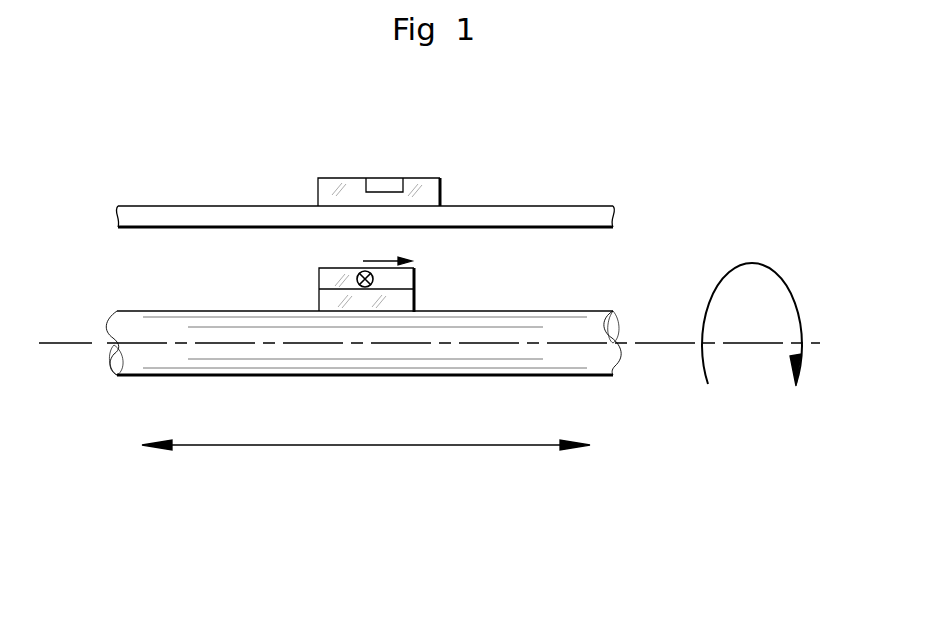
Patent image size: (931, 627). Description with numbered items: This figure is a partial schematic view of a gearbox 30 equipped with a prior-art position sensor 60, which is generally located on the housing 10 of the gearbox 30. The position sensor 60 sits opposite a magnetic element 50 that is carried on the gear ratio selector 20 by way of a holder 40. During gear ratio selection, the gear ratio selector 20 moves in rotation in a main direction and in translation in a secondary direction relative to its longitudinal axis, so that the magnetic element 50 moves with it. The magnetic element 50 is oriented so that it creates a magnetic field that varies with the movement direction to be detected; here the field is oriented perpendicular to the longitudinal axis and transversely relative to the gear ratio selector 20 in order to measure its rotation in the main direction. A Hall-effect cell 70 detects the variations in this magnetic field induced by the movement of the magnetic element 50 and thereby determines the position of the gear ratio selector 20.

The housing 10 is at (547, 212).
The gear ratio selector 20 is at (570, 318).
The gearbox 30 is at (324, 144).
The holder 40 is at (427, 323).
The magnetic element 50 is at (410, 273).
The position sensor 60 is at (427, 190).
The Hall-effect cell 70 is at (379, 188).